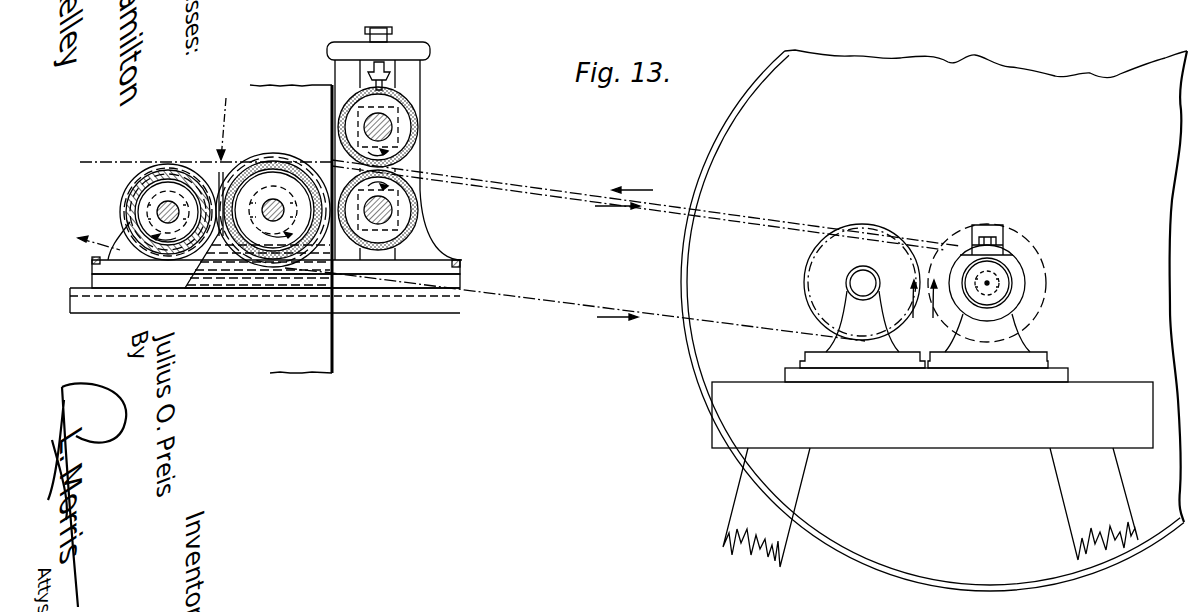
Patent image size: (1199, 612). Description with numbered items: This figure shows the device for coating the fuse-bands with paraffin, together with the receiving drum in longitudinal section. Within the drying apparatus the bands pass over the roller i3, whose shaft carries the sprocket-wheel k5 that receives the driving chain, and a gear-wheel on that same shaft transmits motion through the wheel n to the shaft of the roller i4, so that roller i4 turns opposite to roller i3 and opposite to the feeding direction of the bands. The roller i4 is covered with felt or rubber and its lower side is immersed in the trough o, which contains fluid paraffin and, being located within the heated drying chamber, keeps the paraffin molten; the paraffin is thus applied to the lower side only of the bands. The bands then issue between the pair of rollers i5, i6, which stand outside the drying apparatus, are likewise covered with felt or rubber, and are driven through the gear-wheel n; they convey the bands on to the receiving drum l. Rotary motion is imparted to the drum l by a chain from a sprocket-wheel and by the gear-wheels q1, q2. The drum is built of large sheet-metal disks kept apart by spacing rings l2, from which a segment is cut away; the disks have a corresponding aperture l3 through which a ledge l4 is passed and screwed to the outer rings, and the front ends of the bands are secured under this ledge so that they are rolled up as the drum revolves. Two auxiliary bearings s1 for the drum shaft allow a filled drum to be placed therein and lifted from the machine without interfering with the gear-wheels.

The sprocket-wheel k5 is at (161, 165).
The roller i3 is at (168, 172).
The gear-wheel n is at (255, 150).
The roller i4 is at (279, 165).
The roller i5 is at (418, 210).
The roller i6 is at (418, 126).
The trough o is at (262, 284).
The receiving drum l is at (934, 320).
The spacing rings l2 is at (1016, 266).
The aperture l3 is at (1002, 229).
The ledge l4 is at (985, 250).
The auxiliary bearings s1 is at (1013, 285).
The gear-wheel q1 is at (806, 272).
The gear-wheel q2 is at (1046, 289).